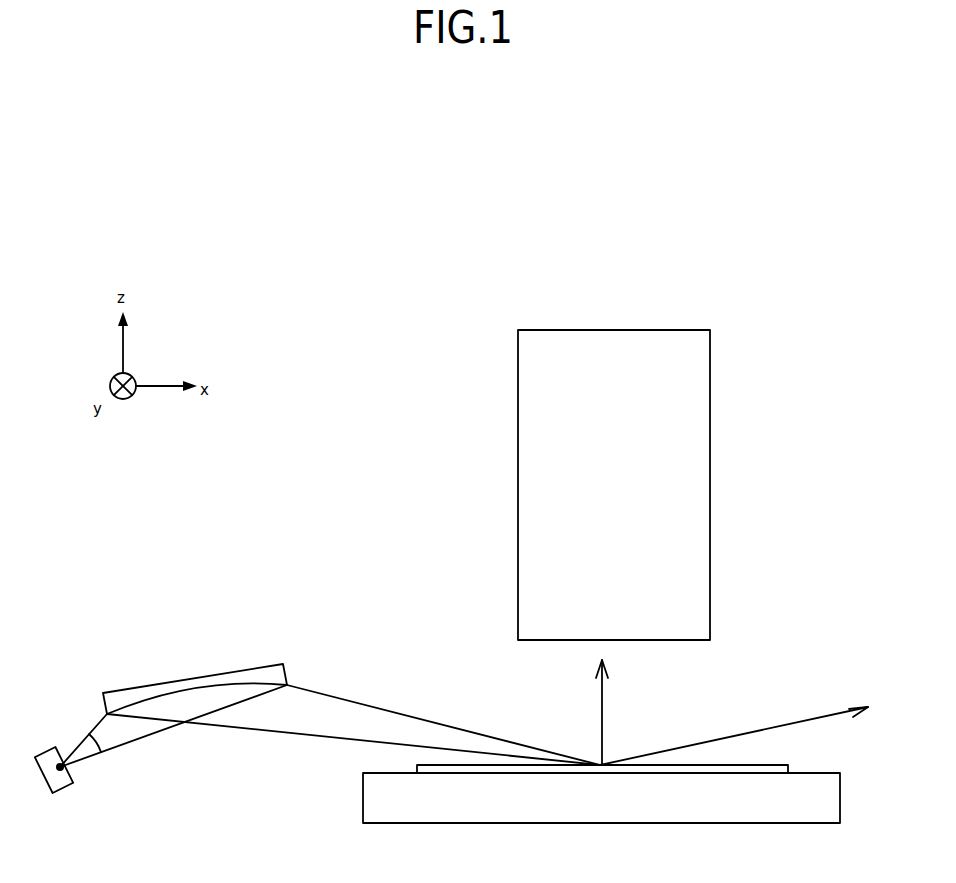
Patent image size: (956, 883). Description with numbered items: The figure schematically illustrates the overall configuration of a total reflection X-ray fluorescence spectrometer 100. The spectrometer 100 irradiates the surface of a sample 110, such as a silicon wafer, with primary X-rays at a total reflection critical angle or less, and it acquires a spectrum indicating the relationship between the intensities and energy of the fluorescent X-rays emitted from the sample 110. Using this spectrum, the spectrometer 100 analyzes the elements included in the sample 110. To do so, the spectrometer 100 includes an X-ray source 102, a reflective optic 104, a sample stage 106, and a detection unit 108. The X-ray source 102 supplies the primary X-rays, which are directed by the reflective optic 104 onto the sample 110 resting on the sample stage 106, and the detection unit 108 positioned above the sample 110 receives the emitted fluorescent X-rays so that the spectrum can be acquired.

The total reflection X-ray fluorescence spectrometer 100 is at (548, 223).
The X-ray source 102 is at (61, 791).
The reflective optic 104 is at (132, 688).
The sample stage 106 is at (458, 823).
The detection unit 108 is at (645, 330).
The sample 110 is at (767, 765).